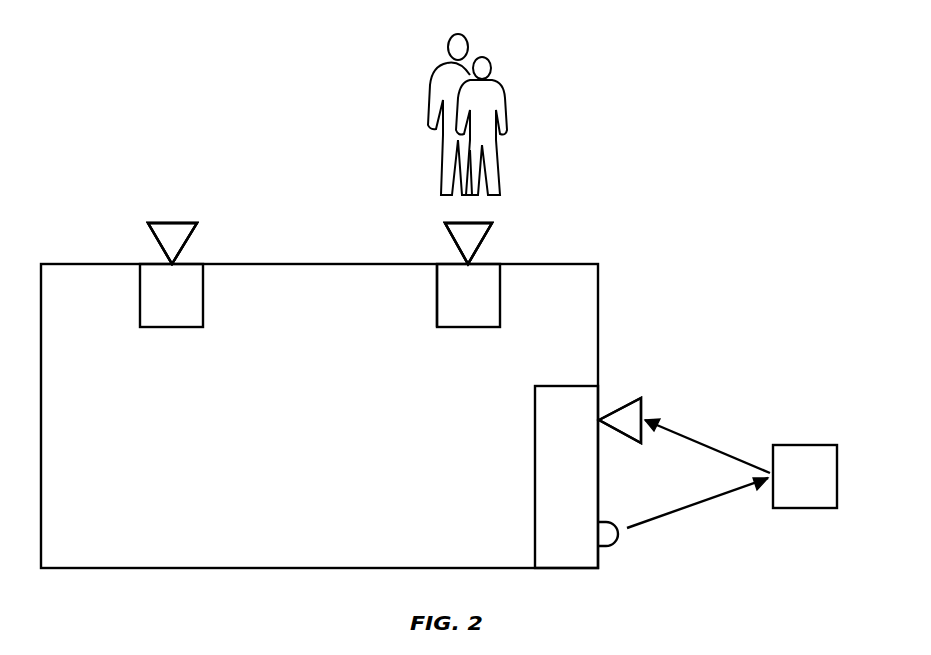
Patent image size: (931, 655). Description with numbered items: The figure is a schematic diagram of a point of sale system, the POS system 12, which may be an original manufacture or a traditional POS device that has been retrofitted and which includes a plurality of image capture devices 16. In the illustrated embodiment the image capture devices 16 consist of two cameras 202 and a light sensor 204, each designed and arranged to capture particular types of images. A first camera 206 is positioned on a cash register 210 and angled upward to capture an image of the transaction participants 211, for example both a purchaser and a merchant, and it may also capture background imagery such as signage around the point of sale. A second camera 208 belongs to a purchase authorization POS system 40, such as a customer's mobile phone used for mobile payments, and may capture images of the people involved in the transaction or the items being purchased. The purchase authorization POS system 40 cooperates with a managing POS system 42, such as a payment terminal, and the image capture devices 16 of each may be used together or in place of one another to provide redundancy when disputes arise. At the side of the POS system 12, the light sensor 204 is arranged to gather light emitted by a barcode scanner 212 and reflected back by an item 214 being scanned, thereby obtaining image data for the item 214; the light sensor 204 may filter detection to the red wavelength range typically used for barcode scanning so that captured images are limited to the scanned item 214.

The POS system 12 is at (322, 263).
The image capture devices 16 is at (158, 243).
The purchase authorization POS system 40 is at (203, 297).
The managing POS system 42 is at (500, 292).
The cameras 202 is at (320, 243).
The light sensor 204 is at (620, 407).
The first camera 206 is at (483, 243).
The second camera 208 is at (185, 243).
The cash register 210 is at (437, 292).
The transaction participants 211 is at (458, 33).
The barcode scanner 212 is at (535, 476).
The item 214 is at (807, 445).